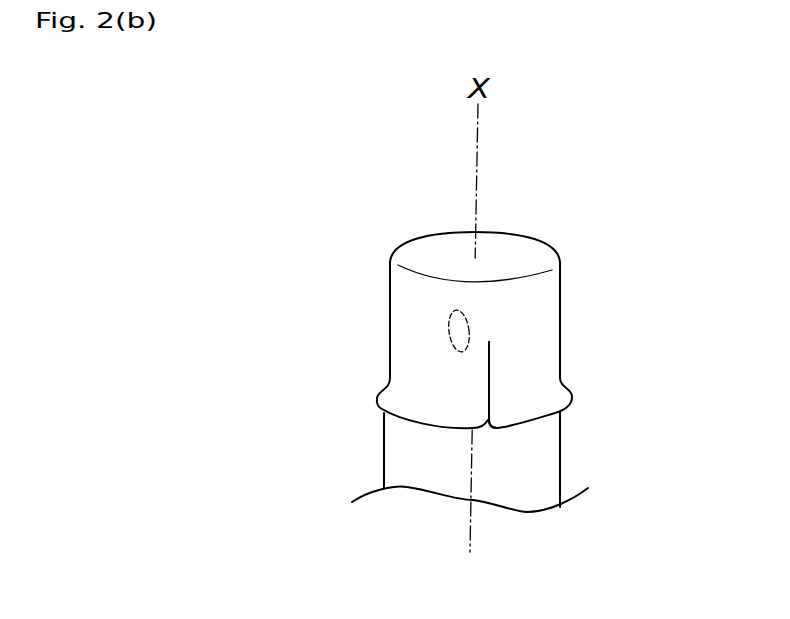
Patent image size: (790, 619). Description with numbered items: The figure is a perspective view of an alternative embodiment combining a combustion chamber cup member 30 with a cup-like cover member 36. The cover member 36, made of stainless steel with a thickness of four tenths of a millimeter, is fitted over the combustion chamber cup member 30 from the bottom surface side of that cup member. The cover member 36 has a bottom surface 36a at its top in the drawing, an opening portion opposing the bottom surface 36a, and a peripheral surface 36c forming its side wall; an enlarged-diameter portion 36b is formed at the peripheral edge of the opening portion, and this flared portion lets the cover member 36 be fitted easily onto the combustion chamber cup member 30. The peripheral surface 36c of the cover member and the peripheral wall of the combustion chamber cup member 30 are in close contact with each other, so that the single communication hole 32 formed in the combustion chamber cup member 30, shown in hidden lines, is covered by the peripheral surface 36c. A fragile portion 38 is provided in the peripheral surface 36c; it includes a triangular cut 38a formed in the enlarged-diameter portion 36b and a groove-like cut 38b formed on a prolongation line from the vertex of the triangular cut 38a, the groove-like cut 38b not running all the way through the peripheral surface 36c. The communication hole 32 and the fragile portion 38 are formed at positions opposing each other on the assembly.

The combustion chamber cup member 30 is at (537, 463).
The communication hole 32 is at (458, 333).
The cover member 36 is at (570, 270).
The bottom surface 36a is at (498, 252).
The enlarged-diameter portion 36b is at (377, 406).
The peripheral surface 36c is at (407, 308).
The fragile portion 38 is at (638, 333).
The triangular cut 38a is at (493, 425).
The groove-like cut 38b is at (491, 362).